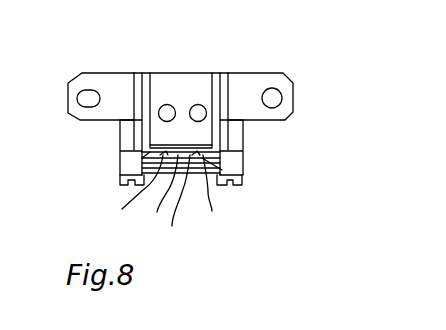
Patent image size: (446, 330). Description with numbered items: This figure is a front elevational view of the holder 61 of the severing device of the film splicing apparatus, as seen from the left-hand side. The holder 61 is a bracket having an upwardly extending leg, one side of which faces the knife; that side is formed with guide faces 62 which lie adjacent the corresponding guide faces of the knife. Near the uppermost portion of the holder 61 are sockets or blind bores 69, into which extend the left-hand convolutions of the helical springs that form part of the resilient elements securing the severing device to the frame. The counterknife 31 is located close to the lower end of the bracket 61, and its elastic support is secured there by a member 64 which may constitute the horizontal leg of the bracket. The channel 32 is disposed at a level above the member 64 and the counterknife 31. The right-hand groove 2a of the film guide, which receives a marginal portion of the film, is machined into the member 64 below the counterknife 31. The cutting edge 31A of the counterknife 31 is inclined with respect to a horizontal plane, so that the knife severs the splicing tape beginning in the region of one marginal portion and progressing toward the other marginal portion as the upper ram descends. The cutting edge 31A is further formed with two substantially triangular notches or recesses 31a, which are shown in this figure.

The sockets or blind bores 69 is at (86, 91).
The guide faces 62 is at (146, 85).
The channel 32 is at (176, 152).
The holder 61 is at (236, 141).
The member 64 is at (121, 166).
The cutting edge 31A is at (170, 155).
The triangular notches or recesses 31a is at (147, 203).
The counterknife 31 is at (157, 196).
The groove or channel 2a is at (217, 195).